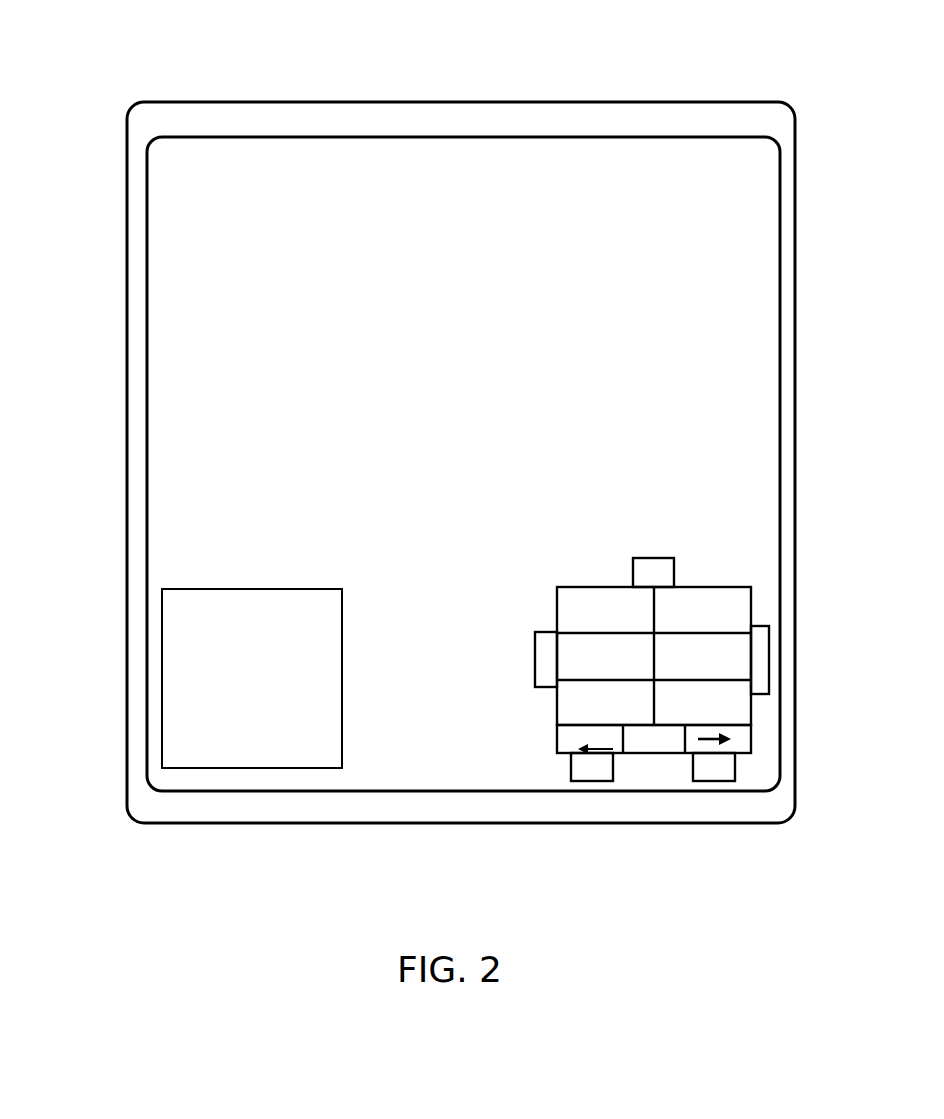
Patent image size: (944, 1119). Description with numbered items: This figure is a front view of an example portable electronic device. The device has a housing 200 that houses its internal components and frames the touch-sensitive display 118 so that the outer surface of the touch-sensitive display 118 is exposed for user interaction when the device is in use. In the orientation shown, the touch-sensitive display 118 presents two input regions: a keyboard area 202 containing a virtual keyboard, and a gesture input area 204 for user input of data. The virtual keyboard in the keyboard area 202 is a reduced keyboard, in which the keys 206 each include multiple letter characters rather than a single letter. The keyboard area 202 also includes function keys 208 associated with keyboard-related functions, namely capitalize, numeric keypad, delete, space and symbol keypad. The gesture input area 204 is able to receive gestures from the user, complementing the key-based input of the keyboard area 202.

The housing 200 is at (640, 122).
The touch-sensitive display 118 is at (686, 333).
The keyboard area 202 is at (712, 645).
The gesture input area 204 is at (184, 625).
The keys 206 is at (737, 708).
The function keys 208 is at (665, 569).